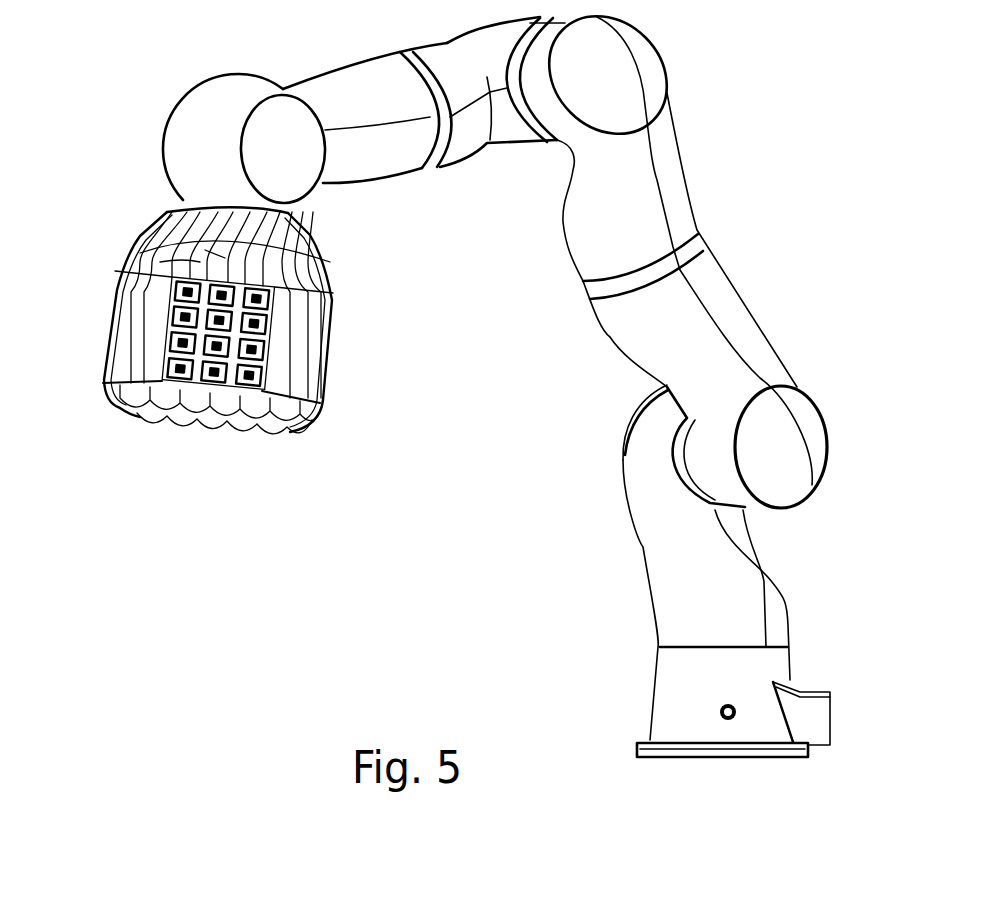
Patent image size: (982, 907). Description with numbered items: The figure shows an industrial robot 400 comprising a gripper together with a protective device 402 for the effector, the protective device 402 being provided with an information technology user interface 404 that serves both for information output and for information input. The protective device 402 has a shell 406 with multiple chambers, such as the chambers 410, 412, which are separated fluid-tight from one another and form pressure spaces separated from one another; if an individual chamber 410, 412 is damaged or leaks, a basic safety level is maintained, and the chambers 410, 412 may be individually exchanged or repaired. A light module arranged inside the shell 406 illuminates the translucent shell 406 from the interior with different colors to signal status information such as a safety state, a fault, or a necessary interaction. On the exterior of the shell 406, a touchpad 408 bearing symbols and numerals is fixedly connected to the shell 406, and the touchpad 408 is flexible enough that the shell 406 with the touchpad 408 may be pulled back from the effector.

The industrial robot 400 is at (750, 192).
The protective device 402 is at (320, 460).
The information technology user interface 404 is at (142, 365).
The shell 406 is at (297, 343).
The touchpad 408 is at (215, 360).
The chamber 410 is at (183, 263).
The chamber 412 is at (215, 260).